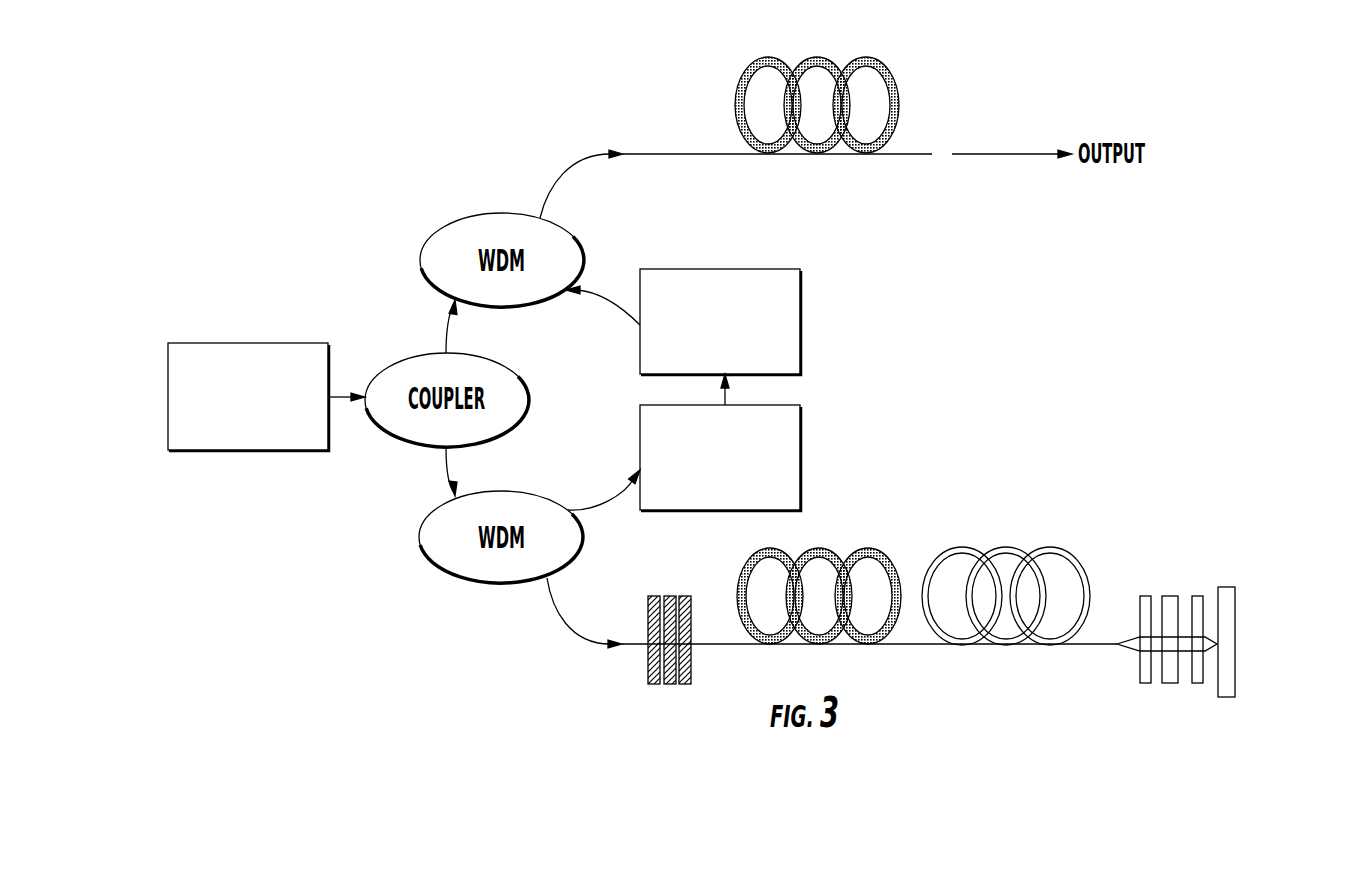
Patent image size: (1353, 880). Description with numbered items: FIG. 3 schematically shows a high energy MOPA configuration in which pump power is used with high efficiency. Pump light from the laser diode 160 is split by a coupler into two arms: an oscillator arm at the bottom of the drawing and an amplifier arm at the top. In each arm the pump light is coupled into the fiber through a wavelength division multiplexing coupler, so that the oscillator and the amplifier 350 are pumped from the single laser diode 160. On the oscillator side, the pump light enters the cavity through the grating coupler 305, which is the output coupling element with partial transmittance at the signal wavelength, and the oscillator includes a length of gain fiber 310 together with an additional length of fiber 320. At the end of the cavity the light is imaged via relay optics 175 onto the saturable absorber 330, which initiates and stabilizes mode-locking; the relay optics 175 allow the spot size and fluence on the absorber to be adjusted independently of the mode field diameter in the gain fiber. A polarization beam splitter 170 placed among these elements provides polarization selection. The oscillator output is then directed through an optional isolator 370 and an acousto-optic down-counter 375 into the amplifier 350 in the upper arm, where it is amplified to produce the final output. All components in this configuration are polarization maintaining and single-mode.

The laser diode 160 is at (250, 343).
The amplifier 350 is at (898, 95).
The acousto-optic down-counter (AOM) 375 is at (800, 282).
The isolator (ISO) 370 is at (800, 432).
The gain fiber coil 310 is at (813, 545).
The passive fiber coil 320 is at (1005, 547).
The grating coupler 305 is at (658, 704).
The relay optics 175 is at (1199, 596).
The polarization beam splitter (PBS) 170 is at (1168, 683).
The saturable absorber 330 is at (1235, 627).